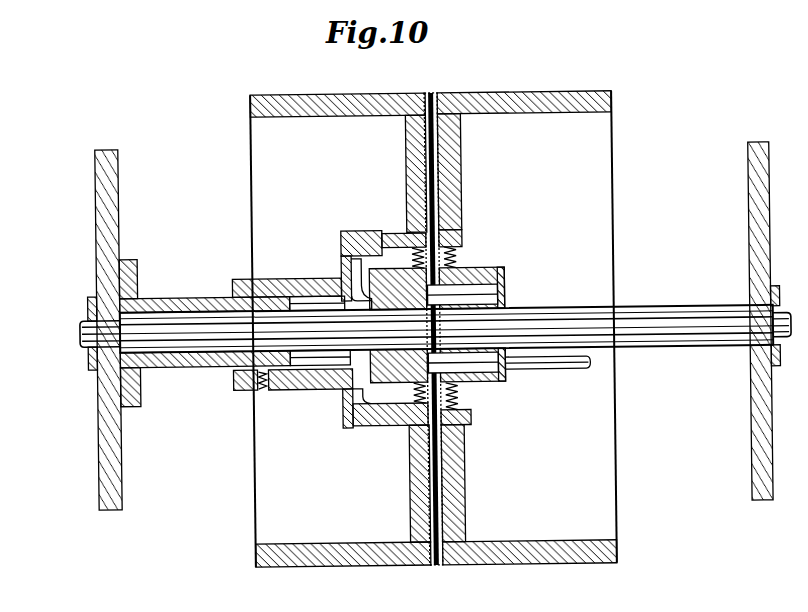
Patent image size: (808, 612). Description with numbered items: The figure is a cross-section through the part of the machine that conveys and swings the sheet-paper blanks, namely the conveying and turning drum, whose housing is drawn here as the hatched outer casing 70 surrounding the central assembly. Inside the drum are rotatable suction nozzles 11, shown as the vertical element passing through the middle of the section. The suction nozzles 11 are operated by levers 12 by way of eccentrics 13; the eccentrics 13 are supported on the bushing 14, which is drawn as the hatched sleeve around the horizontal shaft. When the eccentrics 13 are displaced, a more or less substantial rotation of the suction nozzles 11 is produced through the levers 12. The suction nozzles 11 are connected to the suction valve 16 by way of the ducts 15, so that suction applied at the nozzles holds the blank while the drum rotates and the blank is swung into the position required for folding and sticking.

The housing 70 is at (505, 93).
The suction nozzle 11 is at (436, 93).
The lever 12 is at (397, 233).
The eccentric 13 is at (342, 407).
The bushing 14 is at (198, 277).
The duct 15 is at (466, 288).
The suction valve 16 is at (505, 295).